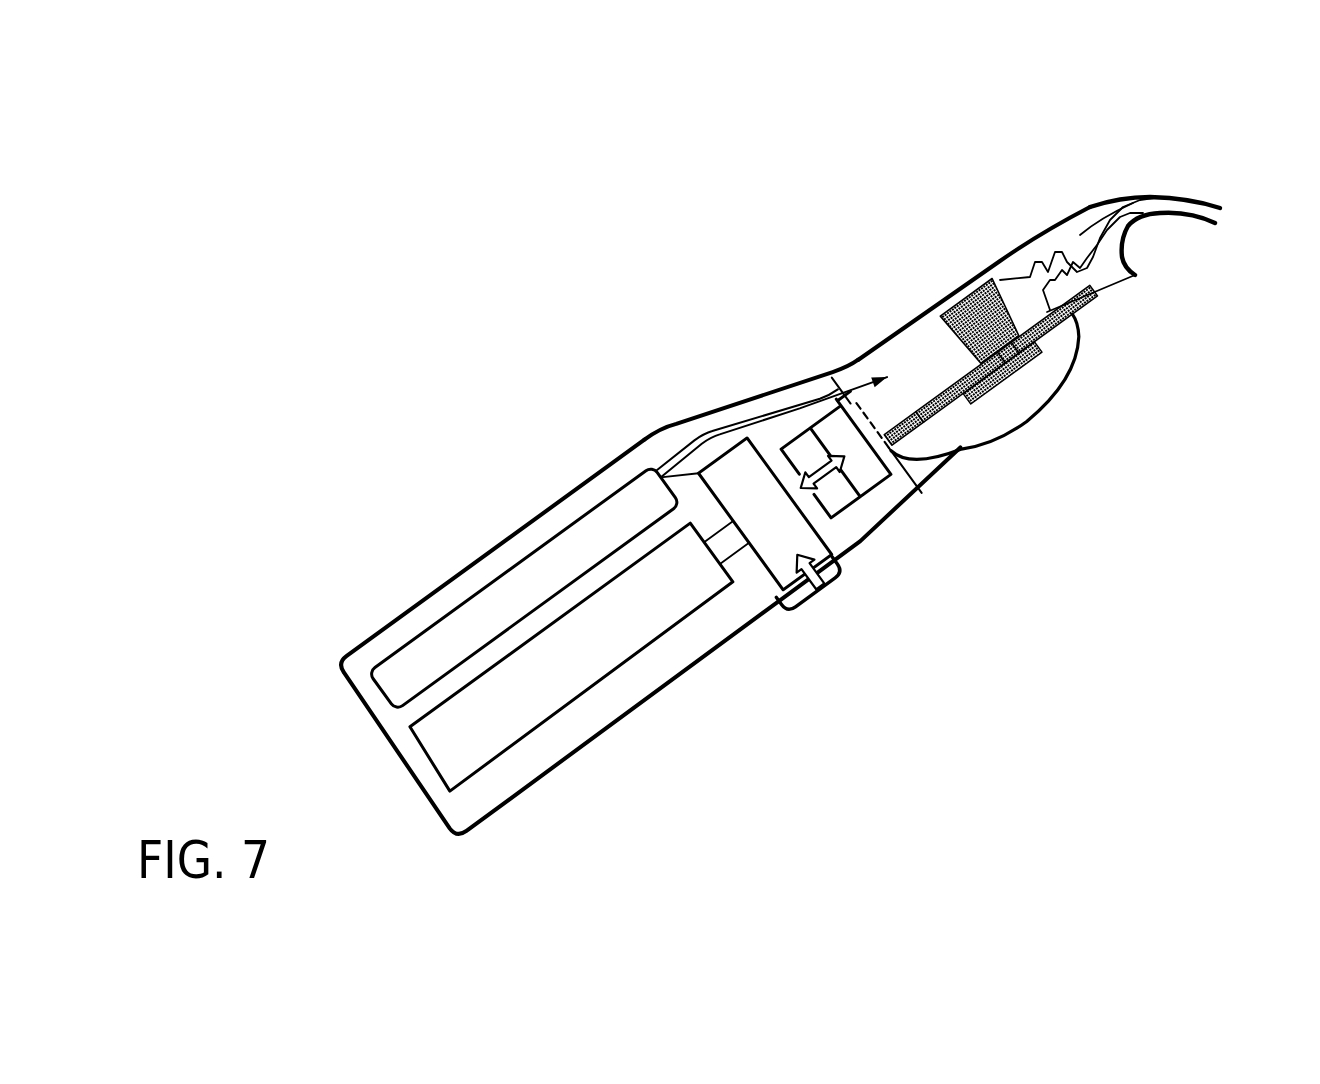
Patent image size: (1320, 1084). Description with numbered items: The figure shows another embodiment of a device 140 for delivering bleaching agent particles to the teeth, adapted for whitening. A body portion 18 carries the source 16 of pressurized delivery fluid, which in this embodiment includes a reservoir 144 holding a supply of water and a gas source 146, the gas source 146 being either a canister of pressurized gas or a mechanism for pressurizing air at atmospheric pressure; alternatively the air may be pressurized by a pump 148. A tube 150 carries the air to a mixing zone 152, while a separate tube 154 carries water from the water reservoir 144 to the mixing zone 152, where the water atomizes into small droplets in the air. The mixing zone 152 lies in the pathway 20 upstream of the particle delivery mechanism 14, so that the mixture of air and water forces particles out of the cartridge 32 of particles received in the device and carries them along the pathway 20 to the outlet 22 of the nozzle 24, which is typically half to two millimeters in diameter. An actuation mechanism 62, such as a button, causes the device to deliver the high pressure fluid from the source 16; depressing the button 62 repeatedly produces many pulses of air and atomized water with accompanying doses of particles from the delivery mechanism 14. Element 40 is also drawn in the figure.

The particle delivery mechanism 14 is at (933, 350).
The source of pressurized delivery fluid 16 is at (614, 565).
The body portion 18 is at (492, 557).
The pathway 20 is at (1090, 240).
The outlet 22 is at (1213, 215).
The nozzle 24 is at (1152, 197).
The cartridge 32 is at (940, 317).
The shaft 40 is at (1057, 352).
The actuation mechanism 62 is at (828, 602).
The device 140 is at (957, 204).
The reservoir 144 is at (378, 638).
The gas source 146 is at (587, 670).
The pump 148 is at (875, 493).
The tube 150 is at (917, 493).
The mixing zone 152 is at (870, 447).
The tube 154 is at (766, 412).